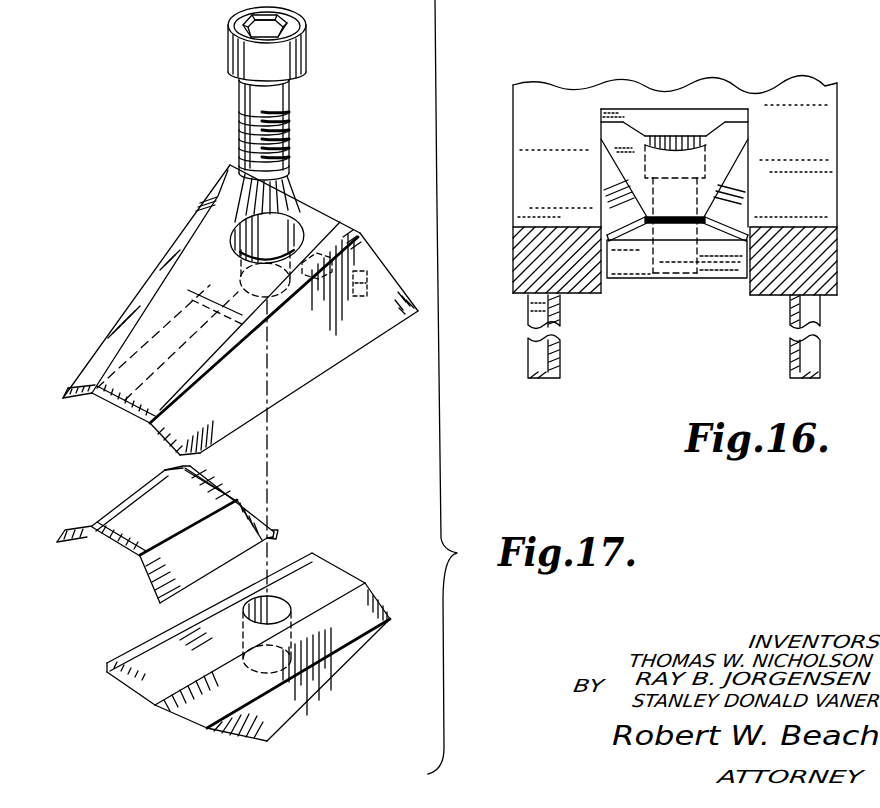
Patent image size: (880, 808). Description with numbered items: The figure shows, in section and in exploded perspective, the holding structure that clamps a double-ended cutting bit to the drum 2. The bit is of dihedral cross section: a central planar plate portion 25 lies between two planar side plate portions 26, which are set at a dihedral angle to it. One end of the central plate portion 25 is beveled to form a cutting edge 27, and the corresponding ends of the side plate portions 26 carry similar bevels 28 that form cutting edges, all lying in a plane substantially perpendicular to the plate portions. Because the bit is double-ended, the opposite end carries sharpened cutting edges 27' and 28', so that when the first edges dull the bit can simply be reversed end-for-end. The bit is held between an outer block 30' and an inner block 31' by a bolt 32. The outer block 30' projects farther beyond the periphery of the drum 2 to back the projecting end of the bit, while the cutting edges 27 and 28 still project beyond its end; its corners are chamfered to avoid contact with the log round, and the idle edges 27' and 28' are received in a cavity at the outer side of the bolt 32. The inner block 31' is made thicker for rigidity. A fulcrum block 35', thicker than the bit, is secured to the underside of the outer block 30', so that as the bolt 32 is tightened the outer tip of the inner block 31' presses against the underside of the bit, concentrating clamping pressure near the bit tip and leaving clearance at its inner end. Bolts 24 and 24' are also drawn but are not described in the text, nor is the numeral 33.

In FIG. 16, the drum 2 is at (803, 93).
In FIG. 16, the bolt 24 is at (559, 378).
In FIG. 16, the bolt 24' is at (569, 311).
In FIG. 17, the central planar plate portion 25 is at (235, 495).
In FIG. 17, the planar side plate portion 26 is at (118, 502).
In FIG. 17, the cutting edge 27 is at (107, 561).
In FIG. 16, the cutting edge 27 is at (714, 196).
In FIG. 17, the cutting edge 27' is at (220, 469).
In FIG. 17, the bevel 28 is at (86, 574).
In FIG. 16, the bevel 28 is at (674, 214).
In FIG. 17, the cutting edge 28' is at (219, 487).
In FIG. 17, the outer block 30' is at (240, 378).
In FIG. 16, the outer block 30' is at (674, 140).
In FIG. 17, the inner block 31' is at (248, 647).
In FIG. 16, the inner block 31' is at (679, 286).
In FIG. 17, the bolt 32 is at (291, 85).
In FIG. 16, the bolt 32 is at (670, 240).
In FIG. 17, the screw hole 33 is at (287, 227).
In FIG. 16, the screw hole 33 is at (682, 137).
In FIG. 17, the fulcrum block 35' is at (382, 253).